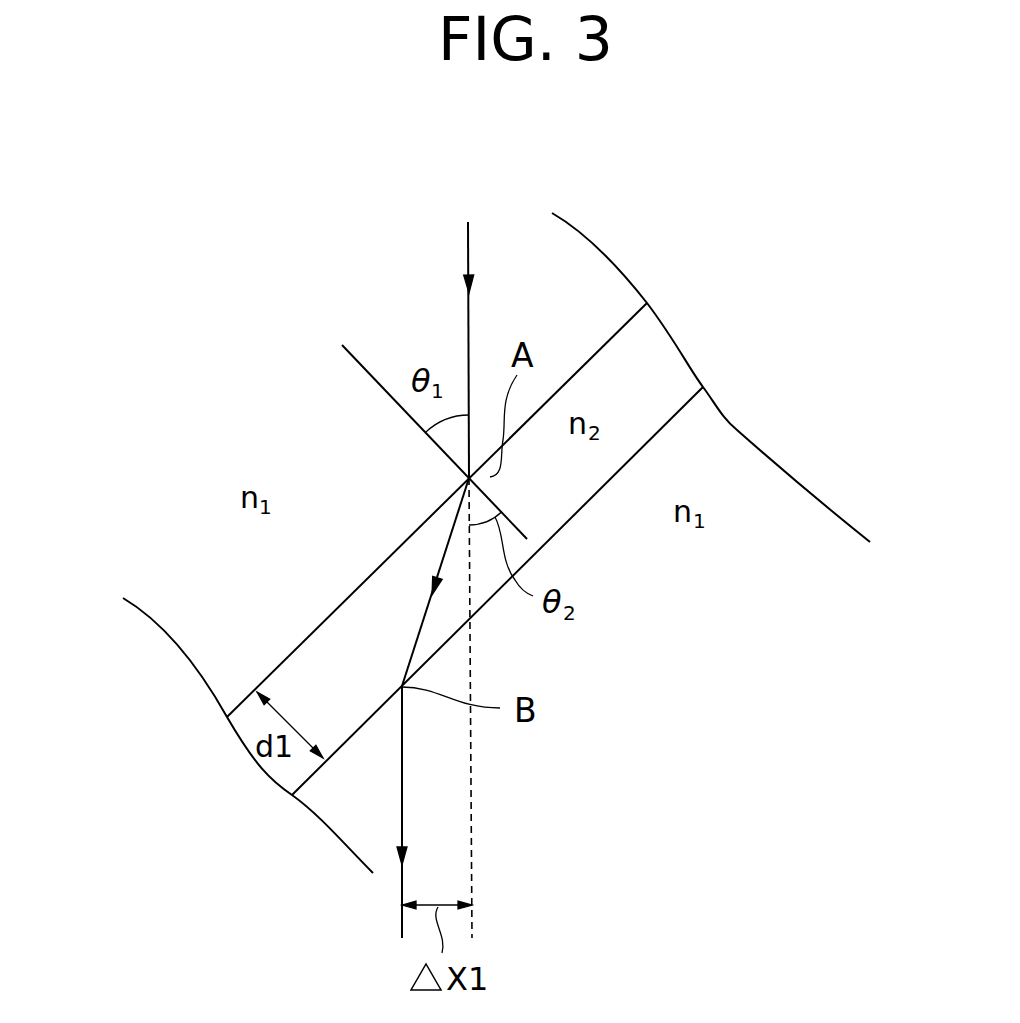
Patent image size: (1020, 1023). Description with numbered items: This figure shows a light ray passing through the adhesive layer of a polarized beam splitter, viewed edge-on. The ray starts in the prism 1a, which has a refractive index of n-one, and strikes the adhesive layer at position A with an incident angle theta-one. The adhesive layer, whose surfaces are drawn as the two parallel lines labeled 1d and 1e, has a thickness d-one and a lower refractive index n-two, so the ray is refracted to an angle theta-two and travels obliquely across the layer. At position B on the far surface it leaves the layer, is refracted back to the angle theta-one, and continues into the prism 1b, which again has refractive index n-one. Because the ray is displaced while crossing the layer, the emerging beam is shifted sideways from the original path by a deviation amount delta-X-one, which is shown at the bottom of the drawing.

The prism 1a is at (266, 611).
The prism 1b is at (674, 689).
The incident surface of plate (refractive index n2) 1d is at (607, 343).
The exit surface of plate 1e is at (663, 421).